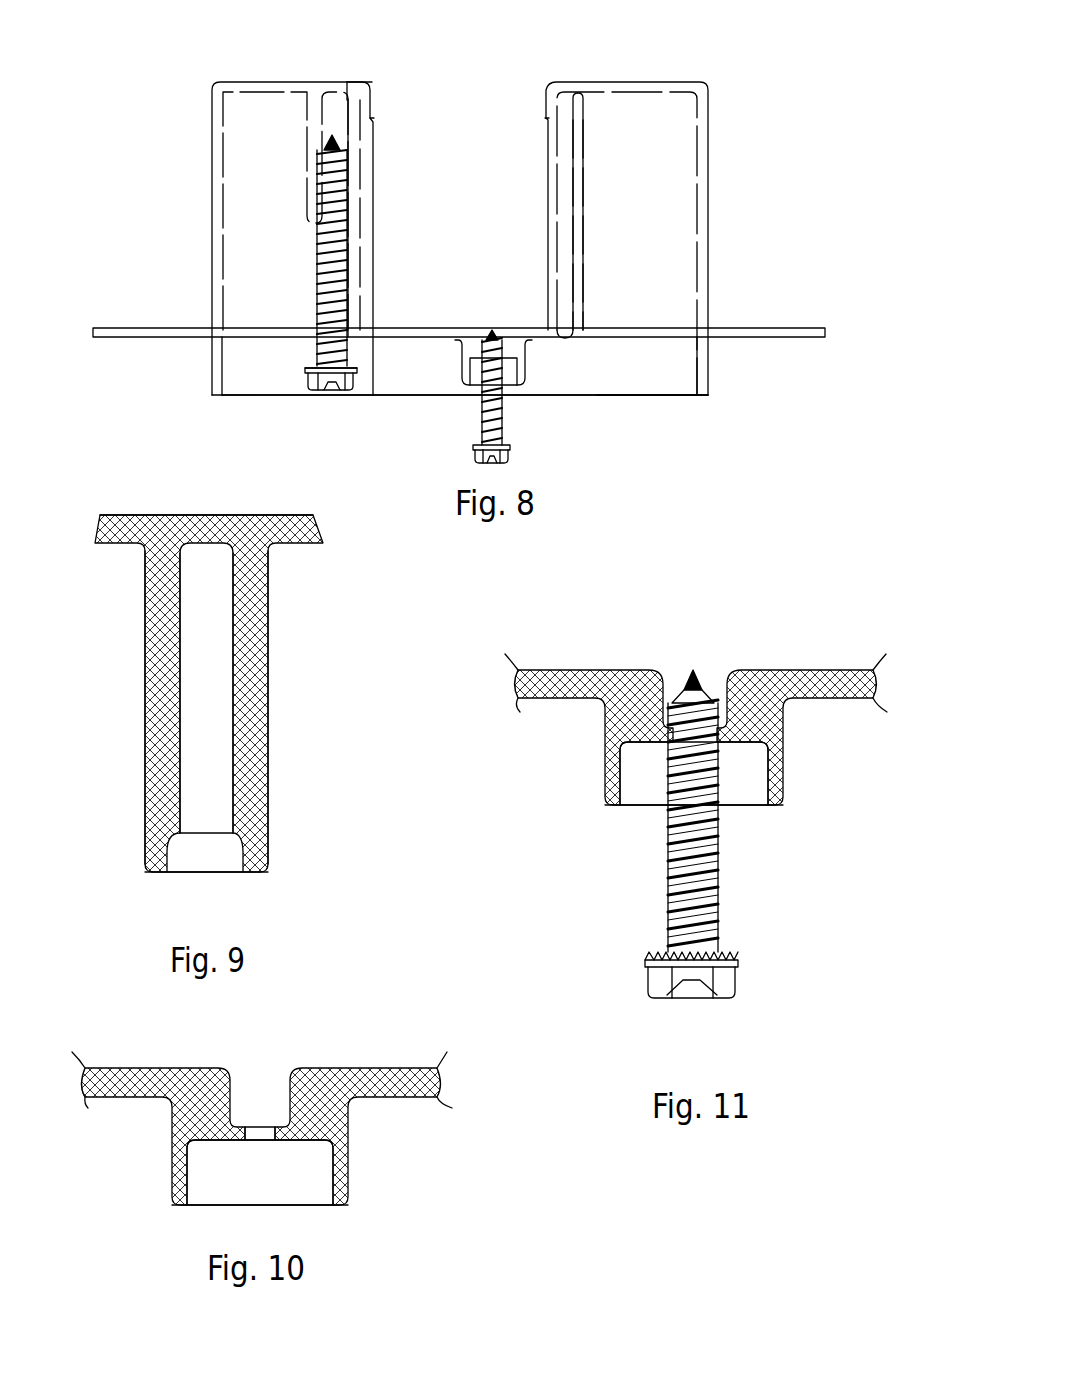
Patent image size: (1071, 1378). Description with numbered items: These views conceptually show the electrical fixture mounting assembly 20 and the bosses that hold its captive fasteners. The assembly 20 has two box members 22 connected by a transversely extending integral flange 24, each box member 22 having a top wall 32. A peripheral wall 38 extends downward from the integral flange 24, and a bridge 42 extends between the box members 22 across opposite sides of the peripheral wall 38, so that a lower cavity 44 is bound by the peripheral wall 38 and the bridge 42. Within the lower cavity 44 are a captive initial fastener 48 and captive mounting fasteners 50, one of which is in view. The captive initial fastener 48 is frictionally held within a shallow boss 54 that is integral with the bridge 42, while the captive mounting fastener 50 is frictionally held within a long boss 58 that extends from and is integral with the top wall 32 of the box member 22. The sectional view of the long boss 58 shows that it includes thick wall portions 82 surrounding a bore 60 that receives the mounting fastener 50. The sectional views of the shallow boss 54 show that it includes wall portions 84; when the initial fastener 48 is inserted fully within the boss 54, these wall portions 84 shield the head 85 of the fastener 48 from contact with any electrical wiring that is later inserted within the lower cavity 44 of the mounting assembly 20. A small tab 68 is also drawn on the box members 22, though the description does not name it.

In FIG. 8, the electrical fixture mounting assembly 20 is at (126, 163).
In FIG. 8, the box member 22 is at (212, 120).
In FIG. 8, the integral flange 24 is at (763, 327).
In FIG. 8, the top wall 32 is at (347, 90).
In FIG. 9, the top wall 32 is at (203, 530).
In FIG. 8, the peripheral wall 38 is at (650, 380).
In FIG. 10, the bridge 42 is at (148, 1082).
In FIG. 8, the lower cavity 44 is at (407, 362).
In FIG. 8, the captive initial fastener 48 is at (502, 418).
In FIG. 11, the captive initial fastener 48 is at (717, 875).
In FIG. 8, the captive mounting fastener 50 is at (317, 313).
In FIG. 8, the shallow boss 54 is at (518, 370).
In FIG. 10, the shallow boss 54 is at (395, 1167).
In FIG. 11, the shallow boss 54 is at (565, 845).
In FIG. 8, the long boss 58 is at (307, 157).
In FIG. 9, the long boss 58 is at (309, 730).
In FIG. 9, the bore 60 is at (202, 760).
In FIG. 8, the tab 68 is at (373, 120).
In FIG. 9, the thick wall portion 82 is at (160, 662).
In FIG. 10, the wall portion 84 is at (173, 1170).
In FIG. 11, the head 85 is at (738, 980).